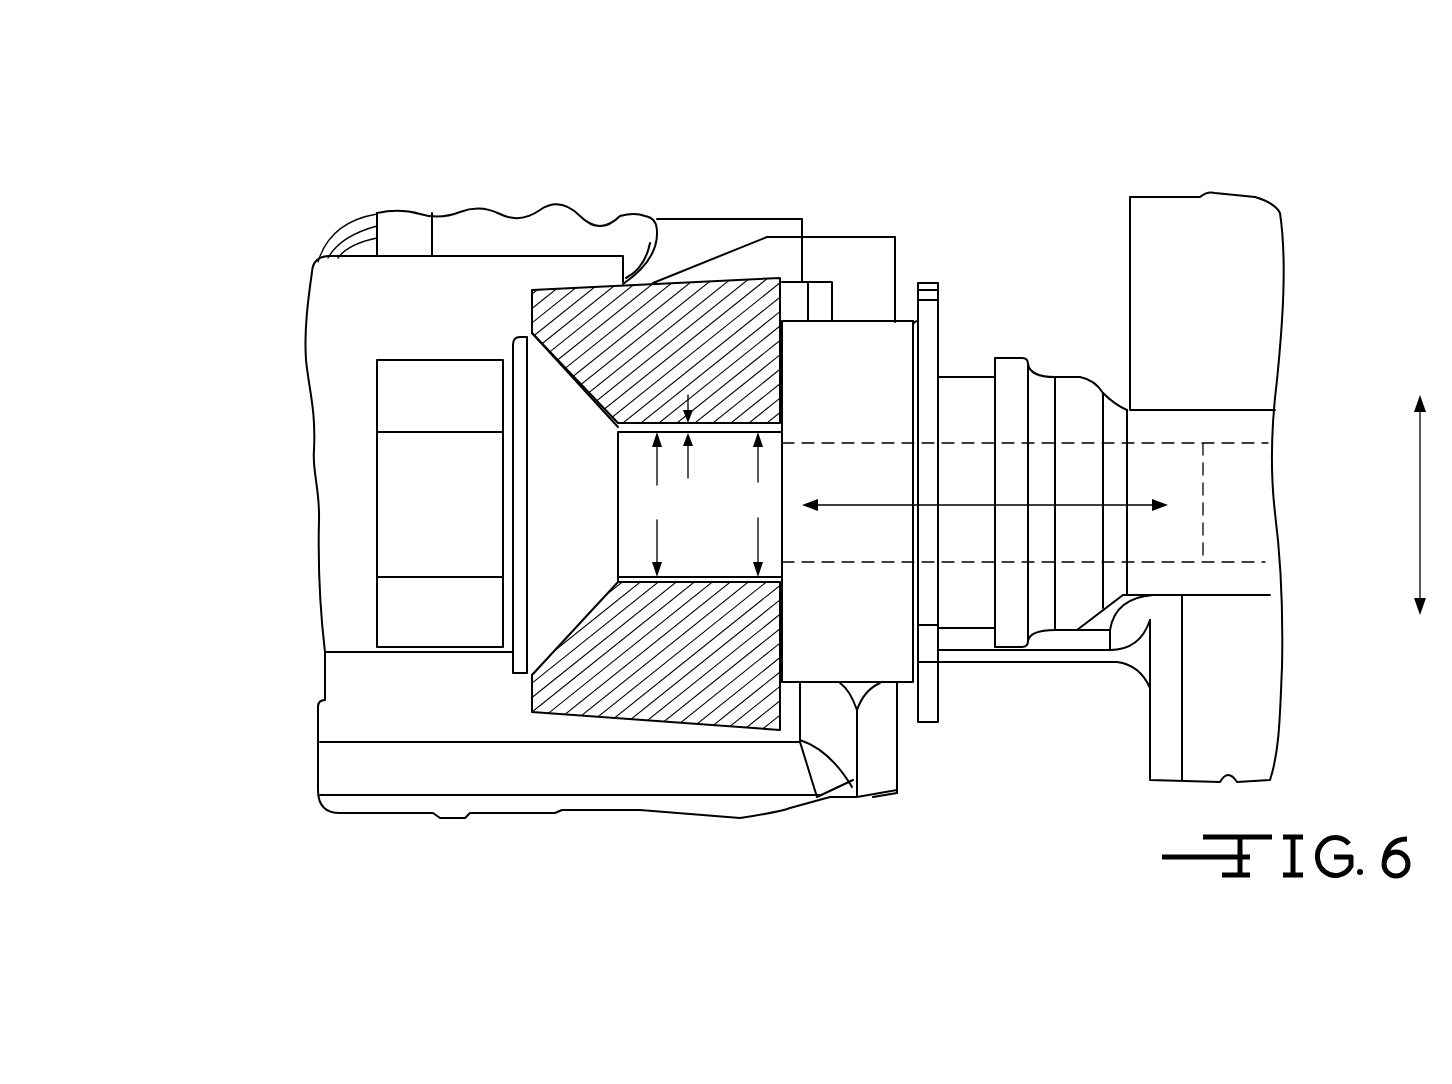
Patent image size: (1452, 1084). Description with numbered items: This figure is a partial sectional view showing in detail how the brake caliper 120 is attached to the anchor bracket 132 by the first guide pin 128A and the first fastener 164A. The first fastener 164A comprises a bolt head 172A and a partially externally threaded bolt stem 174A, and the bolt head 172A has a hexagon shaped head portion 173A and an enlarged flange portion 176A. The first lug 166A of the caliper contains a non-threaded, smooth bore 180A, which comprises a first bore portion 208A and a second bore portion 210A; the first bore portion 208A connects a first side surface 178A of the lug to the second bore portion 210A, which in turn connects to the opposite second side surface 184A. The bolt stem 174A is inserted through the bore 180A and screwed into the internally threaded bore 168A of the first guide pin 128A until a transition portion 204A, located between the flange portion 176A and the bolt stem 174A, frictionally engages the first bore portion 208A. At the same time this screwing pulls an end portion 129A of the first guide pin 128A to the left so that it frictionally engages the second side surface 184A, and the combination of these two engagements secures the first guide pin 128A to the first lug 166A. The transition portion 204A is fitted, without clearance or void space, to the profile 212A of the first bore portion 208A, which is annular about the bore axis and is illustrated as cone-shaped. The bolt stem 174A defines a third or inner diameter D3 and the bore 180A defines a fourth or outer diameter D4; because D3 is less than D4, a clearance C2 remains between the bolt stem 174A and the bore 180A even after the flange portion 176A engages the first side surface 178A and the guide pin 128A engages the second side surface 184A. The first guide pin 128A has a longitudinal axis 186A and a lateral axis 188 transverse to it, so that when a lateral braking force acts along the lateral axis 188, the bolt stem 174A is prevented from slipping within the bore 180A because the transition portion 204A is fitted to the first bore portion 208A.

The brake caliper 120 is at (692, 255).
The first fastener 164A is at (368, 512).
The bolt head 172A is at (400, 393).
The hexagon shaped head portion 173A is at (403, 620).
The flange portion 176A is at (543, 423).
The first lug 166A is at (705, 332).
The bolt stem 174A is at (733, 467).
The transition portion 204A is at (558, 400).
The first bore portion 208A is at (598, 425).
The second side surface 184A is at (790, 375).
The second bore portion 210A is at (780, 352).
The first side surface 178A is at (530, 690).
The profile 212A is at (545, 700).
The end portion 129A is at (843, 648).
The bore 180A is at (682, 540).
The longitudinal axis 186A is at (960, 507).
The internally threaded bore 168A is at (1250, 503).
The anchor bracket 132 is at (1228, 277).
The first guide pin 128A is at (1208, 438).
The lateral axis 188 is at (1420, 565).
The clearance C2 is at (688, 418).
The fourth diameter D4 is at (652, 504).
The third diameter D3 is at (757, 504).